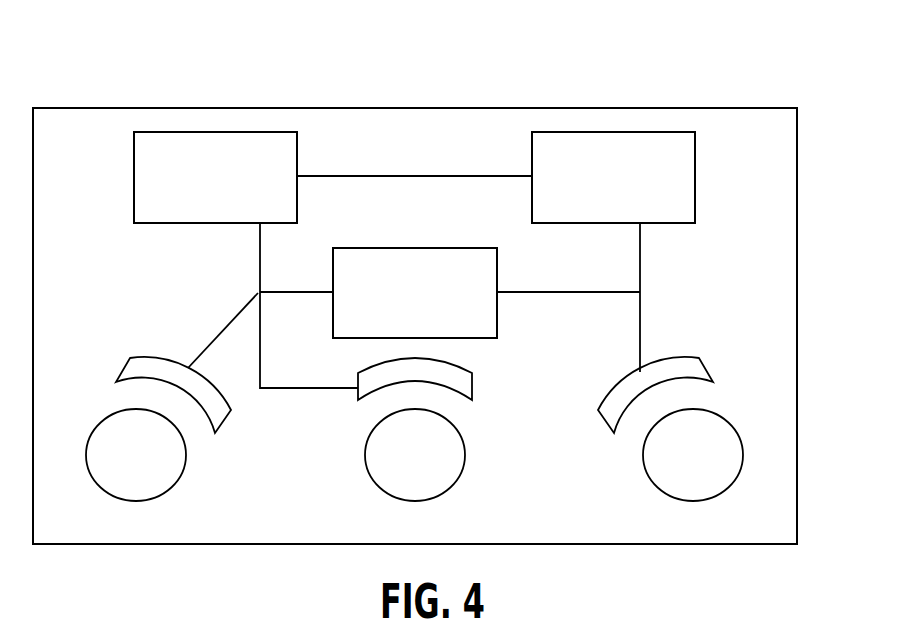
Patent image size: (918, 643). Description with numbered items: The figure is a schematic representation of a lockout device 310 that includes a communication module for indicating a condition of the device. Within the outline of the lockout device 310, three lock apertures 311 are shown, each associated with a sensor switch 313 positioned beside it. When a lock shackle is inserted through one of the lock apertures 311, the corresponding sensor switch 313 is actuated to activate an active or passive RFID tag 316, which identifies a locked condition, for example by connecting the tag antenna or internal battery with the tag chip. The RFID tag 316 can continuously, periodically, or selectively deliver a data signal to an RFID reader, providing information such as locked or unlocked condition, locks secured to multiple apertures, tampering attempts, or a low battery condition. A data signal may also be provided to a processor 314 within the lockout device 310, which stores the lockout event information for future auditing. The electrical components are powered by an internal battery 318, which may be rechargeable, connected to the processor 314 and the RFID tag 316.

The lockout device 310 is at (763, 53).
The lock apertures 311 is at (184, 473).
The sensor switches 313 is at (223, 425).
The processor 314 is at (236, 193).
The RFID tag 316 is at (435, 308).
The internal battery 318 is at (634, 193).